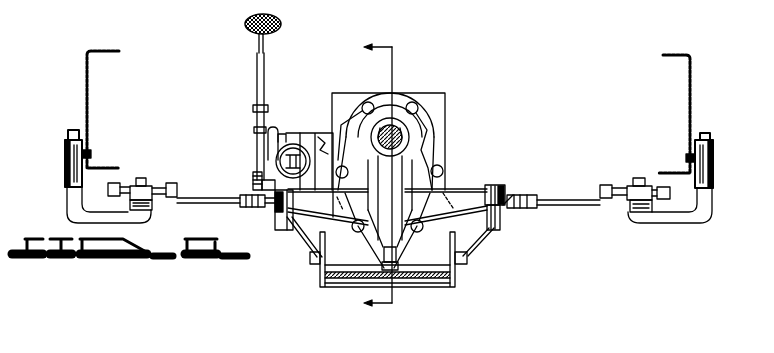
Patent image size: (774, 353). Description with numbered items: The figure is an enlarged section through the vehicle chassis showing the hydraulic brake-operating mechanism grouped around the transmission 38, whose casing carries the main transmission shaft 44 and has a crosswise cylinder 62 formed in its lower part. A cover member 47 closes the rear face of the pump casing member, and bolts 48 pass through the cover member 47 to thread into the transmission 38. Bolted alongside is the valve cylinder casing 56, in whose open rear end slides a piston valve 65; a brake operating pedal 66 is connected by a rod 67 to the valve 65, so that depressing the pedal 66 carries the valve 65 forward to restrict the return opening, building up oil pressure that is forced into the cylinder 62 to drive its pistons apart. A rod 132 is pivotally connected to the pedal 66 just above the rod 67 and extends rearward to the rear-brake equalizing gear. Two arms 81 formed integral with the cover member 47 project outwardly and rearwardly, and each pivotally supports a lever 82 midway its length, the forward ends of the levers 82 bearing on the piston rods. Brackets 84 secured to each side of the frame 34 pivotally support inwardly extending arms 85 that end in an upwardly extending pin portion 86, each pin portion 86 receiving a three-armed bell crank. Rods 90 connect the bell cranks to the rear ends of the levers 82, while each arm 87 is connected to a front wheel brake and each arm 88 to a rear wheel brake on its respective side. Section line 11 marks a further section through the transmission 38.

The section line 11- 11 is at (366, 177).
The frame 34 is at (85, 62).
The transmission 38 is at (446, 98).
The main transmission shaft 44 is at (400, 135).
The cover member 47 is at (423, 165).
The bolts 48 is at (413, 101).
The valve cylinder casing 56 is at (310, 134).
The cylinder 62 is at (433, 285).
The piston valve 65 is at (267, 178).
The brake operating pedal 66 is at (257, 68).
The rod 67 is at (272, 128).
The arms 81 is at (317, 200).
The levers 82 is at (273, 214).
The brackets 84 is at (65, 168).
The arms 85 is at (66, 198).
The pin portion 86 is at (142, 178).
The arm 87 is at (125, 182).
The arm 88 is at (165, 185).
The rods 90 is at (173, 203).
The rod 132 is at (254, 117).